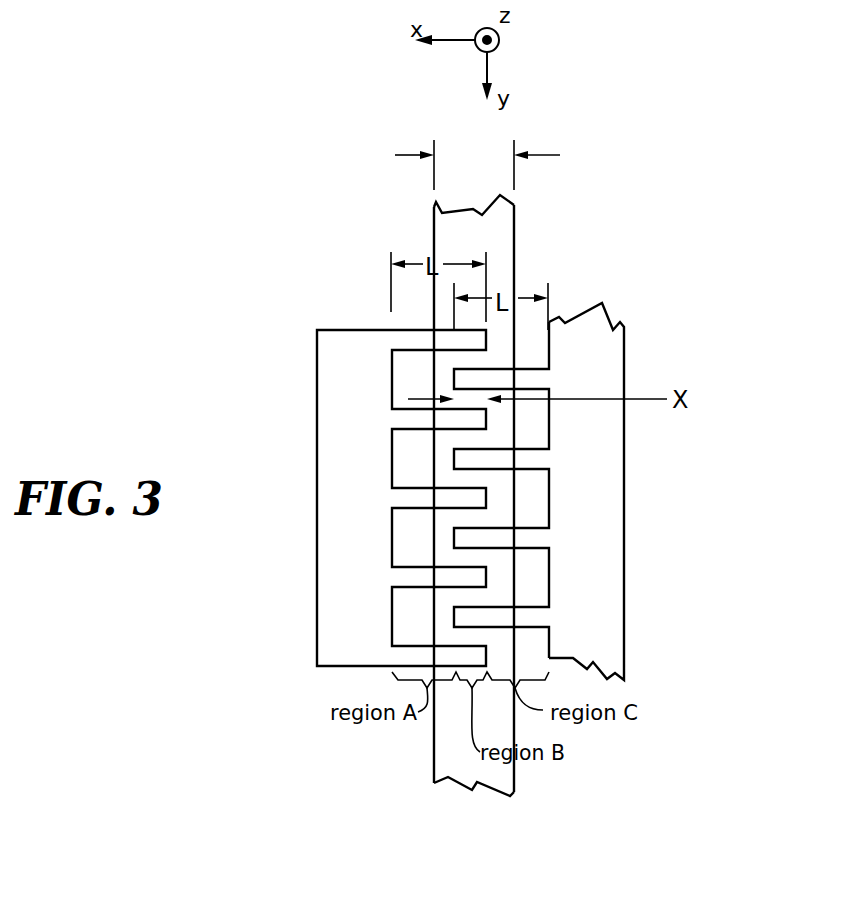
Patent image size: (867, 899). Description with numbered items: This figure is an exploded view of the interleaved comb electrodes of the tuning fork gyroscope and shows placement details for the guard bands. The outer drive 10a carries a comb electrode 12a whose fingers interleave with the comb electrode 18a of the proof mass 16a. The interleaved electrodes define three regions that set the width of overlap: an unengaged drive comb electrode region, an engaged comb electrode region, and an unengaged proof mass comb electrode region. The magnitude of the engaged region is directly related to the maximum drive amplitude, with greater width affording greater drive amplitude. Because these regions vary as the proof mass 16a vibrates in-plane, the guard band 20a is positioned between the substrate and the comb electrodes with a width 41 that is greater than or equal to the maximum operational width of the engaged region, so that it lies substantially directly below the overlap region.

The outer drive 10a is at (317, 481).
The comb electrode 12a is at (408, 340).
The proof mass 16a is at (623, 495).
The comb electrode 18a is at (533, 380).
The guard band 20a is at (502, 227).
The width 41 is at (477, 165).